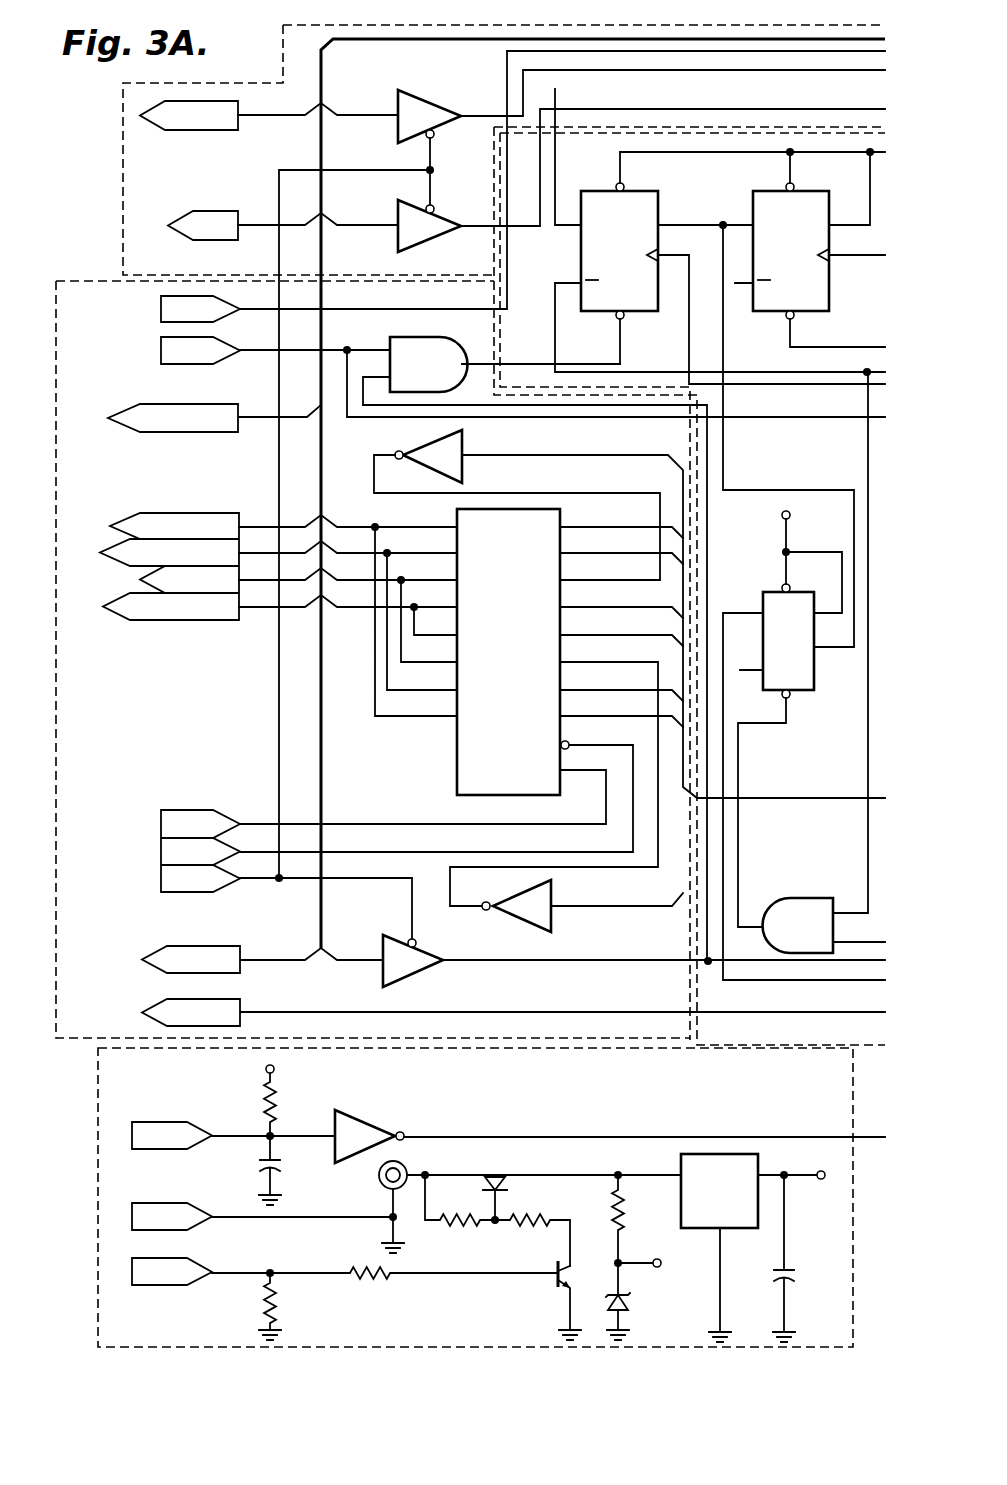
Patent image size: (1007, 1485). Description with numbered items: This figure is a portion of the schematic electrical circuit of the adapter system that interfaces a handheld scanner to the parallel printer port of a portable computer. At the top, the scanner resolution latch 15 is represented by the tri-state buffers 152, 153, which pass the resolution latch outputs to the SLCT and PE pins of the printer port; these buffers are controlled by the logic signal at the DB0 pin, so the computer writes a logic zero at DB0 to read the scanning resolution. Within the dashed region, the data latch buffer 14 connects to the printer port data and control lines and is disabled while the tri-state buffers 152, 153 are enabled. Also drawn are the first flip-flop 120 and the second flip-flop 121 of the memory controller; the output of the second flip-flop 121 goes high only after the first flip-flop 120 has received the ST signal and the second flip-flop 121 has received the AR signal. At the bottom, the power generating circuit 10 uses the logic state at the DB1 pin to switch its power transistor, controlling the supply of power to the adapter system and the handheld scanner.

The power generating circuit 10 is at (128, 1173).
The data latch buffer 14 is at (106, 300).
The scanner resolution latch 15 is at (178, 172).
The first flip-flop 120 is at (766, 190).
The second flip-flop 121 is at (647, 190).
The tri-state buffer 152 is at (439, 236).
The tri-state buffer 153 is at (441, 114).